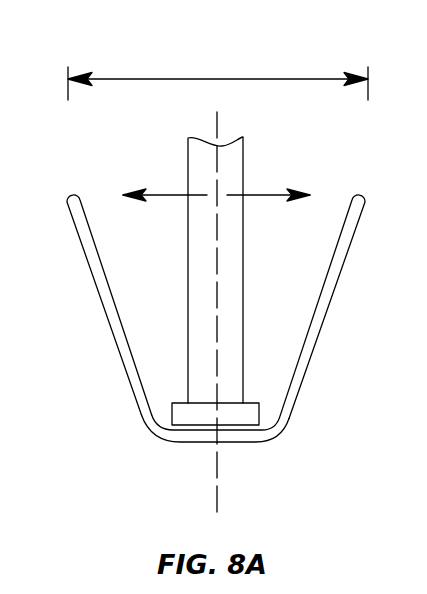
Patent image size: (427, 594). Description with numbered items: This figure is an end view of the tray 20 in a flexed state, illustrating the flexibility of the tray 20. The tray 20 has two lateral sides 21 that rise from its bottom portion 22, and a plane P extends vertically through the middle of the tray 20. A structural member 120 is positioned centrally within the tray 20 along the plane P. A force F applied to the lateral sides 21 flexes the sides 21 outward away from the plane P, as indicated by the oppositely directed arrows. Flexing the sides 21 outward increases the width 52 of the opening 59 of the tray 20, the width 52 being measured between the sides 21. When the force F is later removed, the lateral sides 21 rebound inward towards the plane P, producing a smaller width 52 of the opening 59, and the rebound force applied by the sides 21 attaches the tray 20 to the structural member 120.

The tray 20 is at (203, 348).
The lateral sides 21 is at (98, 295).
The base 22 is at (182, 444).
The width 52 is at (238, 78).
The opening 59 is at (298, 253).
The structural member 120 is at (230, 166).
The force F is at (178, 193).
The plane P is at (217, 479).